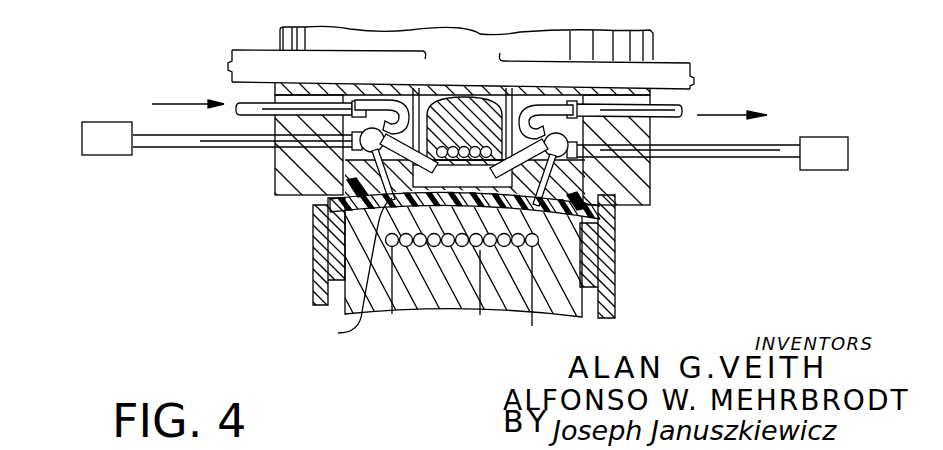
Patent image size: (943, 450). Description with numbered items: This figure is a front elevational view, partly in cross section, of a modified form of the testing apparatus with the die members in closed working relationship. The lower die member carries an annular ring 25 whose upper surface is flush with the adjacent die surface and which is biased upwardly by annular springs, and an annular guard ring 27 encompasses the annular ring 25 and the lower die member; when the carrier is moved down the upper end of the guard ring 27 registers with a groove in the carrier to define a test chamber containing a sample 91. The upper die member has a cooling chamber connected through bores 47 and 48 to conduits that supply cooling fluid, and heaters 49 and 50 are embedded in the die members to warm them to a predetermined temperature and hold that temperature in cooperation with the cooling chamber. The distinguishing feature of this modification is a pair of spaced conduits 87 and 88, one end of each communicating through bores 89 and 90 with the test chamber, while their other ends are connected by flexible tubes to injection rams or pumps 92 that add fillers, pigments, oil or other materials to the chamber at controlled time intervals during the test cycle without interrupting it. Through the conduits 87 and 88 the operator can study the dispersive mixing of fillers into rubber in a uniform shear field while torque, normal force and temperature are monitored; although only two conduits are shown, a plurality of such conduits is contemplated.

The annular ring 25 is at (327, 252).
The annular guard ring 27 is at (606, 259).
The bore 47 is at (413, 92).
The bore 48 is at (512, 92).
The heater 49 is at (486, 99).
The heater 50 is at (479, 318).
The conduit 87 is at (353, 174).
The conduit 88 is at (560, 181).
The bore 89 is at (330, 211).
The bore 90 is at (598, 222).
The sample 91 is at (338, 333).
The injection ram of pump 92 is at (110, 140).